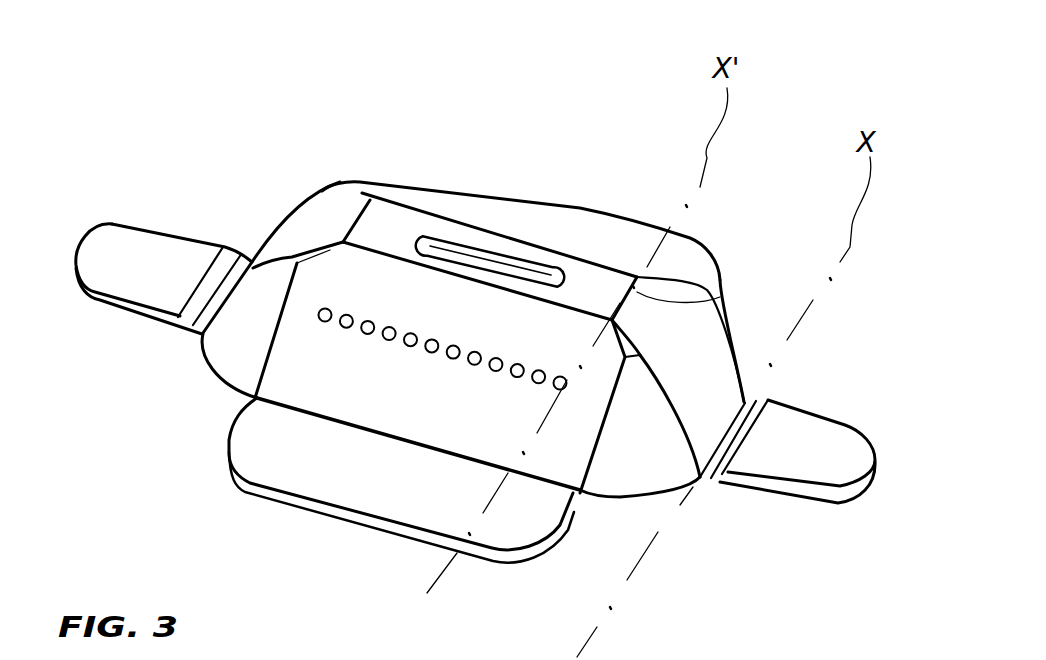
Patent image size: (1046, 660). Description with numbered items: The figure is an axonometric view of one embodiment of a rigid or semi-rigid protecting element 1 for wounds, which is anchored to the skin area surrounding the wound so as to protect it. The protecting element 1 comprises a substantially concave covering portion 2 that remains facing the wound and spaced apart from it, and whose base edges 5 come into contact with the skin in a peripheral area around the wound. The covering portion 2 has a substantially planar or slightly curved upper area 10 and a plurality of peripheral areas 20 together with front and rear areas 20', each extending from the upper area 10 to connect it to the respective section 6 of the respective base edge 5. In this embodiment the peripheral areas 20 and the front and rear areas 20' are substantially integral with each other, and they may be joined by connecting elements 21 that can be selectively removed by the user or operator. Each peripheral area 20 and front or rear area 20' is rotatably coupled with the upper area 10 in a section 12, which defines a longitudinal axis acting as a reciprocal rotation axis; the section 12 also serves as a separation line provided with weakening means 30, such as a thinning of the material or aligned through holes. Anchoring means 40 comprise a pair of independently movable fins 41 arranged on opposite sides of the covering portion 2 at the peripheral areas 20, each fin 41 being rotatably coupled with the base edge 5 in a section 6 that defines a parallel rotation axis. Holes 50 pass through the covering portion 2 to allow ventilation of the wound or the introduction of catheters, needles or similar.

The protecting element 1 is at (810, 78).
The covering portion 2 is at (408, 137).
The base edge 5 is at (200, 362).
The section 6 is at (748, 402).
The upper area 10 is at (587, 268).
The section 12 is at (350, 208).
The peripheral area 20 is at (454, 399).
The front and rear area 20' is at (497, 276).
The connecting element 21 is at (237, 363).
The weakening means 30 is at (247, 252).
The anchoring means 40 is at (100, 190).
The fin 41 is at (140, 250).
The hole 50 is at (483, 262).